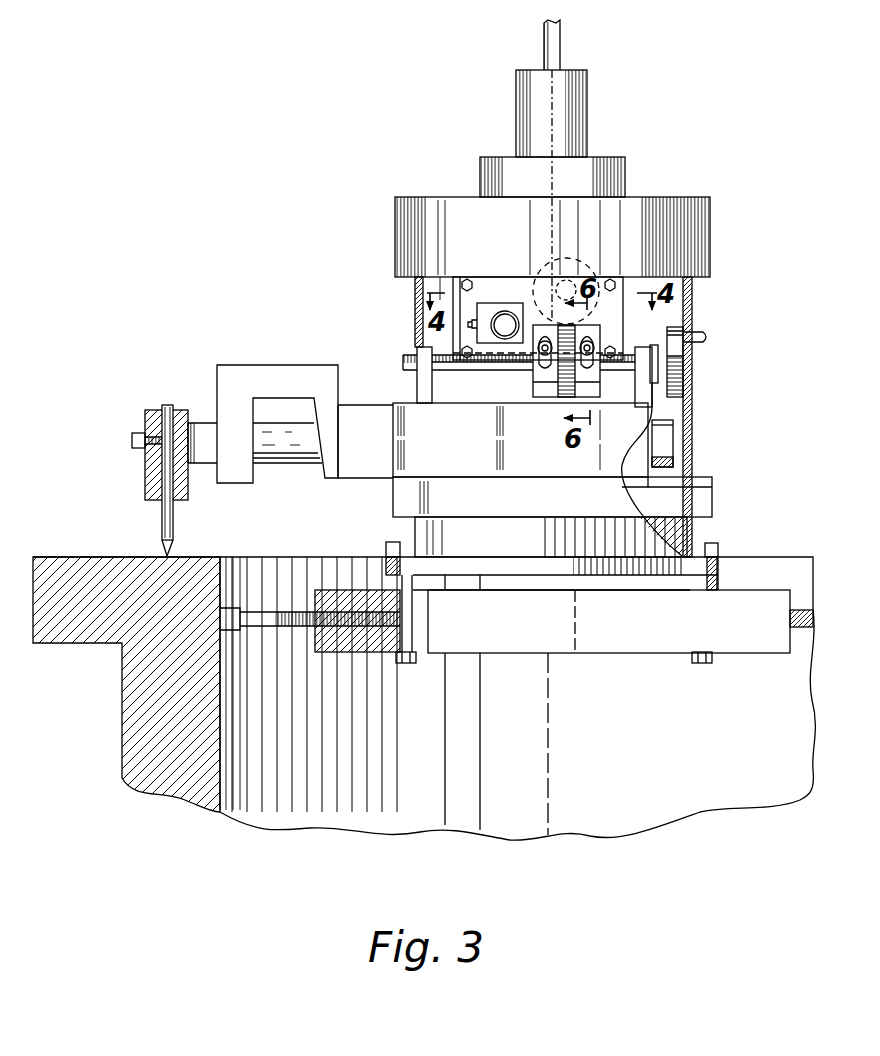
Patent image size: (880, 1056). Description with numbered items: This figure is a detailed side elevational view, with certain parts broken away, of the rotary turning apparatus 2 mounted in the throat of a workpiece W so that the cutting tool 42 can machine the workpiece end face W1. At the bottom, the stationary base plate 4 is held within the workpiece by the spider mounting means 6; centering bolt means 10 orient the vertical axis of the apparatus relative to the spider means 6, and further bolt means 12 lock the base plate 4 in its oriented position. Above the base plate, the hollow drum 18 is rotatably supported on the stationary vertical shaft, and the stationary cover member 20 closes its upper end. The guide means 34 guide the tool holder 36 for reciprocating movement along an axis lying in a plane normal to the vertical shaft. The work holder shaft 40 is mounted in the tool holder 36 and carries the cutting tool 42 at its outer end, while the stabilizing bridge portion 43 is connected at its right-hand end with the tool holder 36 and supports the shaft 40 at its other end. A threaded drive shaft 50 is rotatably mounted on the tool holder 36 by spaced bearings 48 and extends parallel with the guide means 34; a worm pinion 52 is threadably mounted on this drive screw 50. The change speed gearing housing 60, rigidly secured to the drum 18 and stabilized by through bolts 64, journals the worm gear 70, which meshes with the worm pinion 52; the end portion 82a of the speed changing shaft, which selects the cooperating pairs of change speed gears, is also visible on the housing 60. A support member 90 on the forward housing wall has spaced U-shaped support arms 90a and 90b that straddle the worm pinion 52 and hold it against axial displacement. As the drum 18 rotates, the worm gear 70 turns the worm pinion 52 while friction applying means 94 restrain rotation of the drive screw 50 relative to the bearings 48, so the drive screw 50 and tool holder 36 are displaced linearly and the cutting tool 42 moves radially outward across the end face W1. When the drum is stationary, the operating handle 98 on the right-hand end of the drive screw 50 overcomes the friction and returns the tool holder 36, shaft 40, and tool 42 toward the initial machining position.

The rotary turning apparatus 2 is at (571, 170).
The stationary base plate 4 is at (488, 576).
The spider mounting means 6 is at (556, 654).
The centering bolt means 10 is at (387, 549).
The bolt means 12 is at (406, 664).
The hollow drum 18 is at (696, 300).
The stationary cover member 20 is at (432, 195).
The guide means 34 is at (420, 500).
The tool holder 36 is at (355, 456).
The work holder shaft 40 is at (275, 463).
The cutting tool 42 is at (161, 549).
The stabilizing bridge portion 43 is at (280, 365).
The spaced bearings 48 is at (417, 350).
The threaded drive shaft 50 is at (436, 371).
The worm pinion 52 is at (543, 398).
The change speed gearing housing 60 is at (447, 278).
The through bolts 64 is at (470, 279).
The worm gear 70 is at (567, 272).
The sight 82a is at (507, 310).
The support member 90 is at (560, 377).
The U-shaped support arm 90a is at (540, 398).
The U-shaped support arm 90b is at (592, 398).
The friction applying means 94 is at (682, 360).
The operating handle 98 is at (709, 337).
The workpiece W is at (128, 703).
The workpiece end face W1 is at (187, 555).